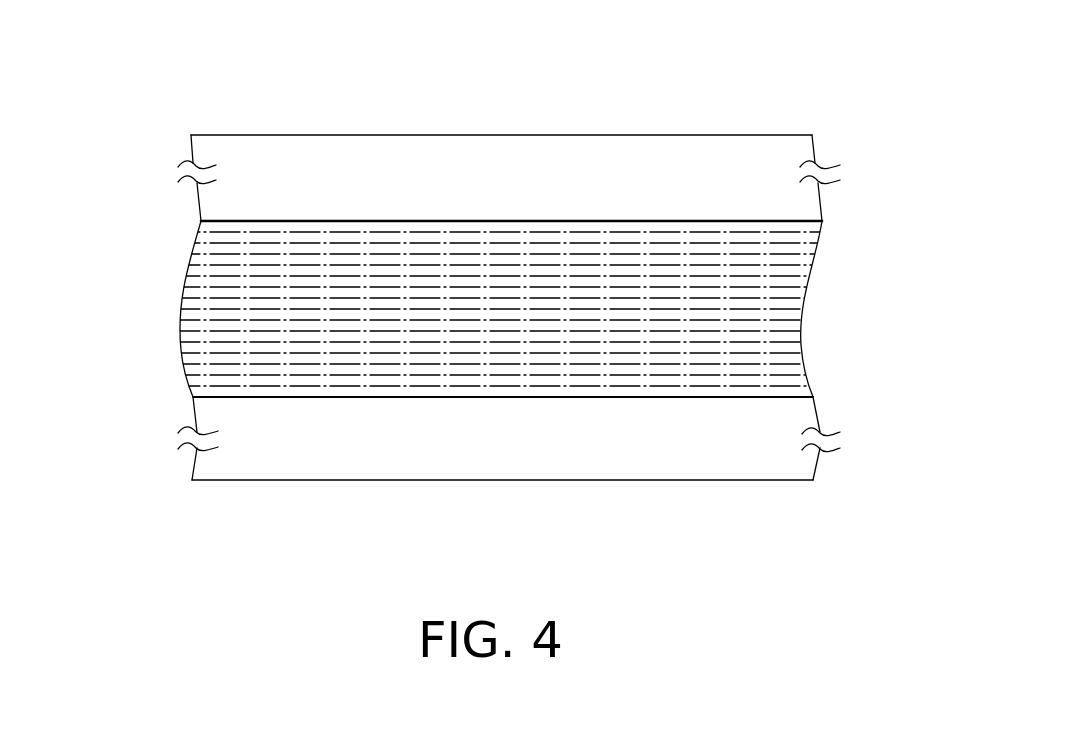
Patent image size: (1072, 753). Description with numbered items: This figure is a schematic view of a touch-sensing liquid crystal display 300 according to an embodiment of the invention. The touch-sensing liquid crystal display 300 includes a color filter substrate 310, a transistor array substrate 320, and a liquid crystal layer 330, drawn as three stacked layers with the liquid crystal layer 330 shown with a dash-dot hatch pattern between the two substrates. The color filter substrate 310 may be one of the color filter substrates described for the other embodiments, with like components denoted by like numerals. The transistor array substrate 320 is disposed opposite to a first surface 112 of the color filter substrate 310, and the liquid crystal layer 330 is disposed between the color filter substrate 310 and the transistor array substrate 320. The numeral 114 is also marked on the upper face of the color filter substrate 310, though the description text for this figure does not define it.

The touch-sensing liquid crystal display 300 is at (565, 304).
The color filter substrate 310 is at (559, 129).
The transistor array substrate 320 is at (782, 420).
The liquid crystal layer 330 is at (767, 329).
The first surface 112 is at (657, 222).
The top surface 114 is at (644, 135).